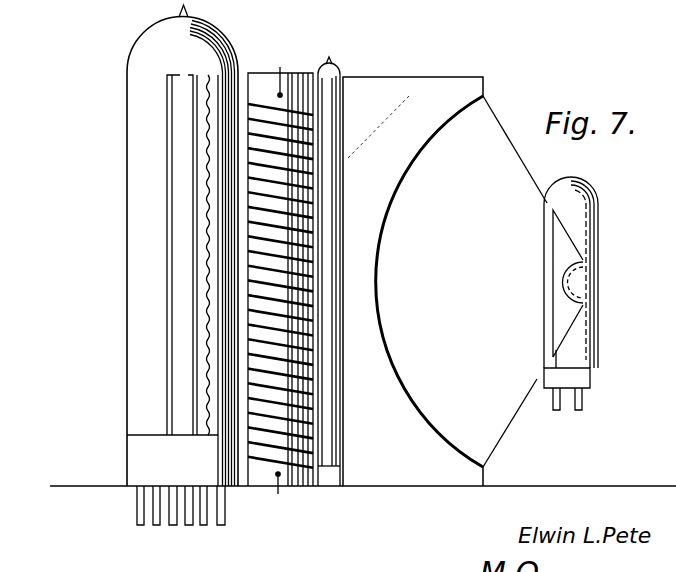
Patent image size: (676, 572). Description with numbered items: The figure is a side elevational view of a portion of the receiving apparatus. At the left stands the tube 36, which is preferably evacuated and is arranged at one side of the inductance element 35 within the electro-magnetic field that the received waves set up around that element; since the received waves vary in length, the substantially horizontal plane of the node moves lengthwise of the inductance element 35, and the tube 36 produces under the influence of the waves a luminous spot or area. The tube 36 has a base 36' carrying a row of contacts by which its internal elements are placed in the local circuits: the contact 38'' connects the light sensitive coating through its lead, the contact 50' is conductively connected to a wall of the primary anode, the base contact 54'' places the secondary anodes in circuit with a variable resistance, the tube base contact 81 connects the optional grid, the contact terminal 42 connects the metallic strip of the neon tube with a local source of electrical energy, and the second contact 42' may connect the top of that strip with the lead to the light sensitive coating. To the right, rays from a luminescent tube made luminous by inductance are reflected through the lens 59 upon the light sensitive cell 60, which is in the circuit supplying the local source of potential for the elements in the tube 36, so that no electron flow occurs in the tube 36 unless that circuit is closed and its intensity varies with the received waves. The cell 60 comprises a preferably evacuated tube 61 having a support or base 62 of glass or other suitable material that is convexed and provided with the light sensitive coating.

The tube 36 is at (189, 245).
The base 36' is at (148, 448).
The inductance element 35 is at (295, 82).
The lens 59 is at (432, 86).
The light sensitive cell 60 is at (585, 213).
The tube 61 is at (598, 246).
The support or base 62 is at (580, 352).
The contact 38'' is at (250, 506).
The base contact 54'' is at (123, 521).
The contact 50' is at (156, 525).
The tube base contact 81 is at (174, 517).
The contact terminal 42 is at (203, 526).
The second contact 42' is at (226, 520).